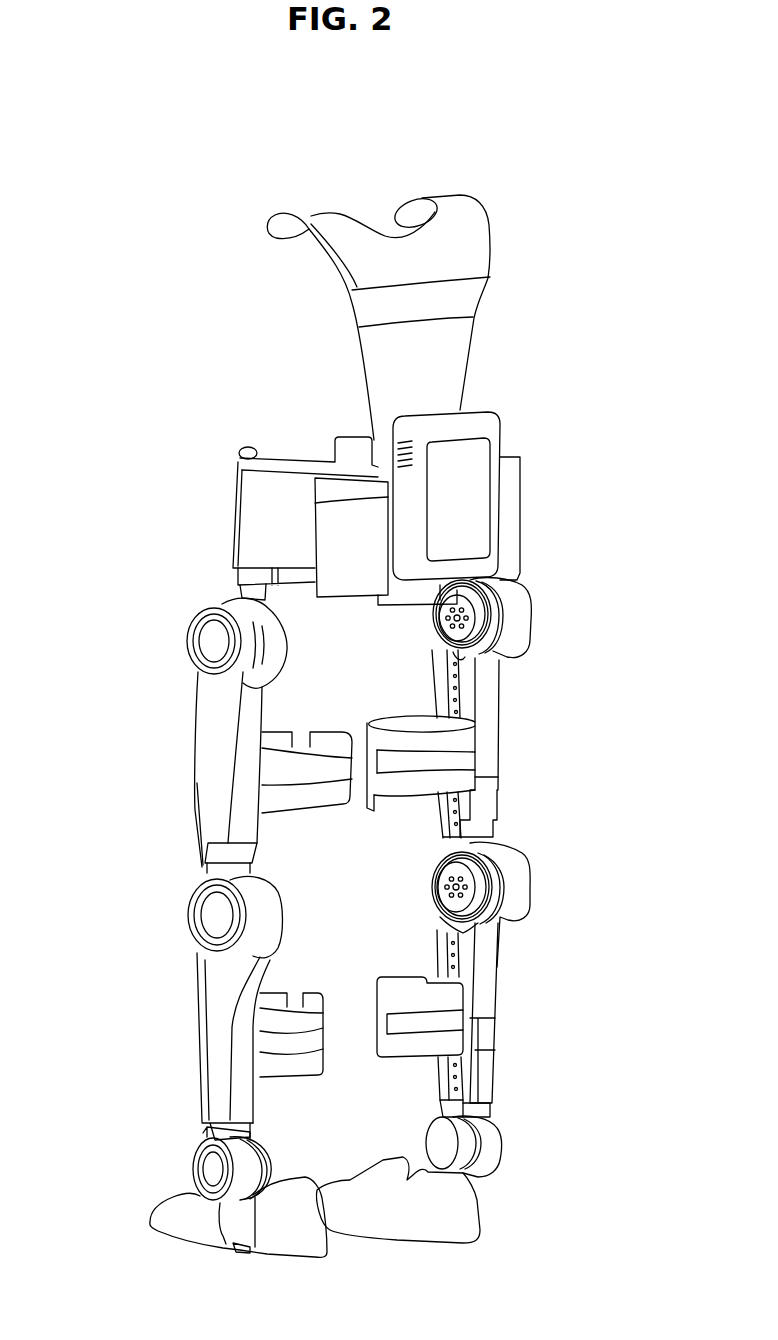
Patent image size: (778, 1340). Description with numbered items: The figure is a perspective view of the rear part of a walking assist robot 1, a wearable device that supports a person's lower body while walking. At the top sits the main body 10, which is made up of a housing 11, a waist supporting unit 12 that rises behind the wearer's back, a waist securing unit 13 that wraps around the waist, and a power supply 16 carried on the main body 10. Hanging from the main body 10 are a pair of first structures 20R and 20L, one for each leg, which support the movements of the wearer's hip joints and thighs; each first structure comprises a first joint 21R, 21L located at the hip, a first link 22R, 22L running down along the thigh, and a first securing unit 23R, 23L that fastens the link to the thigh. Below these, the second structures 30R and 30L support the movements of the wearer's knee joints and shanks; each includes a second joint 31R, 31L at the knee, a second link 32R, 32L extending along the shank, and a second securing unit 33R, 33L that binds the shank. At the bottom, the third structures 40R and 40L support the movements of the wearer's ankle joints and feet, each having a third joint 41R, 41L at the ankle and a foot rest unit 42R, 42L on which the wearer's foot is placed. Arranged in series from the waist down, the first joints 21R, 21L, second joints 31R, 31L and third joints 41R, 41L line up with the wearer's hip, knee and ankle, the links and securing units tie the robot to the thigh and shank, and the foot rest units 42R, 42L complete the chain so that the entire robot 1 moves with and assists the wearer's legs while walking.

The walking assist robot 1 is at (549, 154).
The main body 10 is at (152, 337).
The housing 11 is at (405, 486).
The waist supporting unit 12 is at (376, 323).
The waist securing unit 13 is at (240, 464).
The power supply 16 is at (342, 531).
The first structure 20L is at (78, 620).
The first joint 21L is at (188, 618).
The first link 22L is at (220, 731).
The first securing unit 23L is at (300, 777).
The first structure 20R is at (629, 613).
The first joint 21R is at (512, 614).
The first link 22R is at (499, 718).
The first securing unit 23R is at (470, 777).
The second structure 30L is at (73, 908).
The second joint 31L is at (188, 906).
The second link 32L is at (213, 1010).
The second securing unit 33L is at (292, 1044).
The second structure 30R is at (622, 887).
The second joint 31R is at (500, 887).
The second link 32R is at (483, 992).
The second securing unit 33R is at (465, 1053).
The third structure 40L is at (70, 1173).
The third joint 41L is at (194, 1172).
The foot rest unit 42L is at (160, 1230).
The third structure 40R is at (610, 1142).
The third joint 41R is at (455, 1146).
The foot rest unit 42R is at (453, 1217).